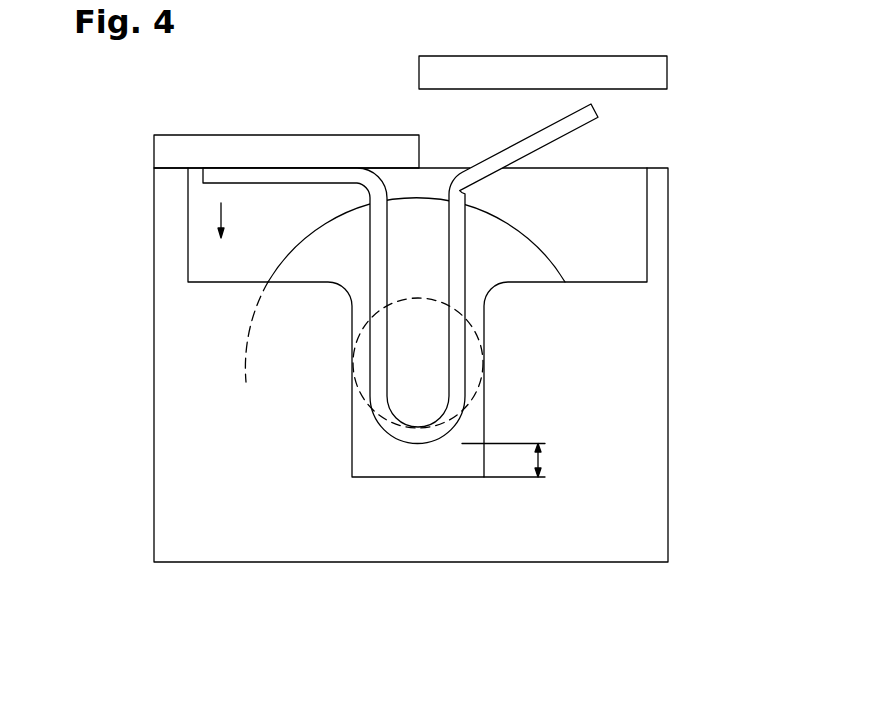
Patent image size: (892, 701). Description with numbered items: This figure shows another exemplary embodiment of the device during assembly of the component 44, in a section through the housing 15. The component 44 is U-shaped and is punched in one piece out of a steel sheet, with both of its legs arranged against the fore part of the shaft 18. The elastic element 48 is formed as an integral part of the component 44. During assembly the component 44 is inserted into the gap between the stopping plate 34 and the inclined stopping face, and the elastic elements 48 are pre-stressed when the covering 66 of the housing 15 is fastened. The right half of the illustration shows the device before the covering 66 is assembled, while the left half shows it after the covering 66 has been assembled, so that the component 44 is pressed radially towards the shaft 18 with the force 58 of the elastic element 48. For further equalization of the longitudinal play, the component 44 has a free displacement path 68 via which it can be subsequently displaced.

The housing 15 is at (655, 525).
The shaft 18 is at (363, 367).
The stopping plate 34 is at (610, 233).
The component 44 is at (457, 290).
The elastic element 48 is at (307, 178).
The force 58 is at (221, 210).
The covering 66 is at (247, 150).
The free displacement path 68 is at (519, 461).